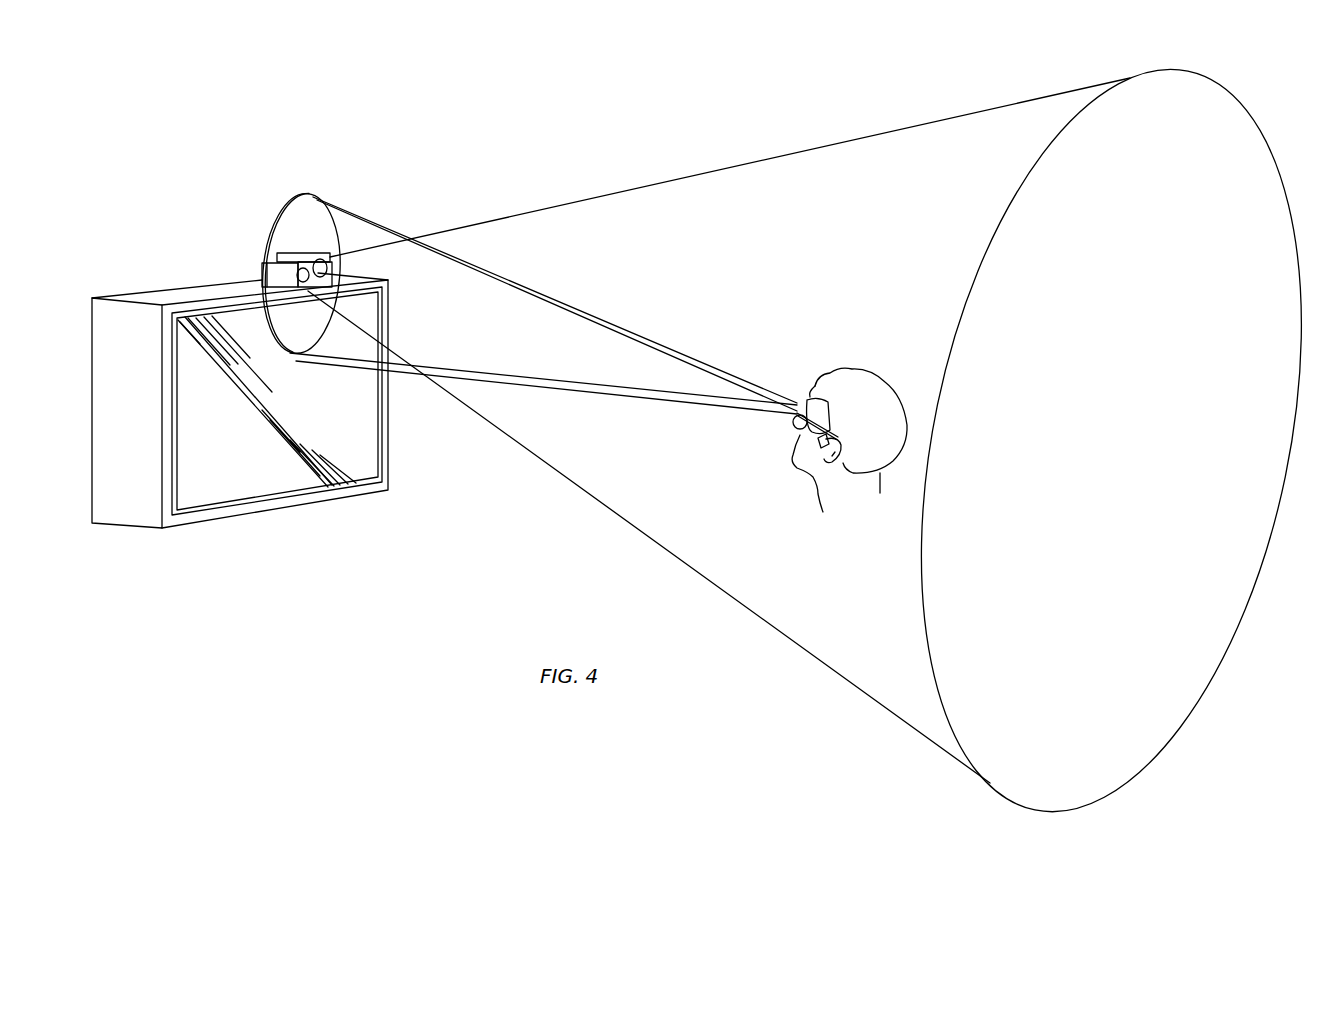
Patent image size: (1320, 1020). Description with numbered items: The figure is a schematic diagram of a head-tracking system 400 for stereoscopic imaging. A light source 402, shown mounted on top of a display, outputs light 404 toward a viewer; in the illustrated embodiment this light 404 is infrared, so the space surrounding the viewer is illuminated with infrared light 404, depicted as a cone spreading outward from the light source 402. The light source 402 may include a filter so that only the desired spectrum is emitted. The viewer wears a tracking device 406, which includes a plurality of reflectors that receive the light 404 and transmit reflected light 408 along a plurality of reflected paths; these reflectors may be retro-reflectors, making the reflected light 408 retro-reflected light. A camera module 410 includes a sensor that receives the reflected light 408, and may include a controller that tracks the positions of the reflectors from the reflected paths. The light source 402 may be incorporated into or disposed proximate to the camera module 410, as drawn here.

The head-tracking system 400 is at (509, 574).
The light source 402 is at (262, 276).
The light 404 is at (665, 182).
The tracking device 406 is at (788, 429).
The reflected light 408 is at (633, 383).
The camera module 410 is at (303, 252).